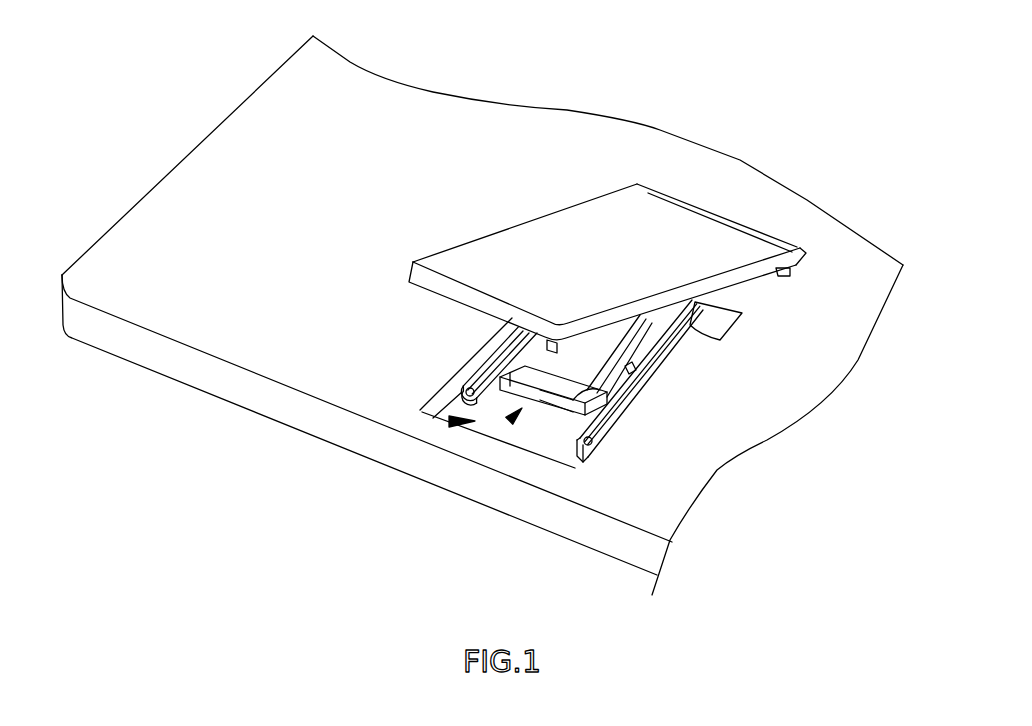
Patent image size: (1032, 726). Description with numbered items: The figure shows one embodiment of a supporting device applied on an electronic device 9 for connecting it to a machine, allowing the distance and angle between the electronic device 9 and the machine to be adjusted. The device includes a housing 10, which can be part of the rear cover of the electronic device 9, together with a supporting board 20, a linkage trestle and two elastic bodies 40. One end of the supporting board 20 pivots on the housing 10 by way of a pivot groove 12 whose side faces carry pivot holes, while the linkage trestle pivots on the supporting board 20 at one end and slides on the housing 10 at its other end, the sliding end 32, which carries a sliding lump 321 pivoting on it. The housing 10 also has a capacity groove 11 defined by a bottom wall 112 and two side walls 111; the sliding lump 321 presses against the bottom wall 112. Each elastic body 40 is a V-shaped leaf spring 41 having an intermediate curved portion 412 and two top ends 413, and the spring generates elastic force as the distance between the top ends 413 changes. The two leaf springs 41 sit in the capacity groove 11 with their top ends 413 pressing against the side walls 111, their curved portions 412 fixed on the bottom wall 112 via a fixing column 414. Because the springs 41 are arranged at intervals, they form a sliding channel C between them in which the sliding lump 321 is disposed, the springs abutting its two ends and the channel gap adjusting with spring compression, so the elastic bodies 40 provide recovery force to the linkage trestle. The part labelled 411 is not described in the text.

The electronic device 9 is at (133, 127).
The housing 10 is at (345, 360).
The capacity groove 11 is at (420, 425).
The side walls 111 is at (443, 392).
The bottom wall 112 is at (450, 422).
The pivot groove 12 is at (768, 234).
The supporting board 20 is at (562, 245).
The sliding end 32 is at (563, 390).
The sliding lump 321 is at (487, 352).
The elastic body 40 is at (692, 395).
The V-shaped leaf spring 41 is at (627, 405).
The clip of link arm 411 is at (686, 408).
The intermediate curved portion 412 is at (615, 460).
The top ends 413 is at (703, 343).
The fixing column 414 is at (587, 463).
The sliding channel C is at (507, 423).